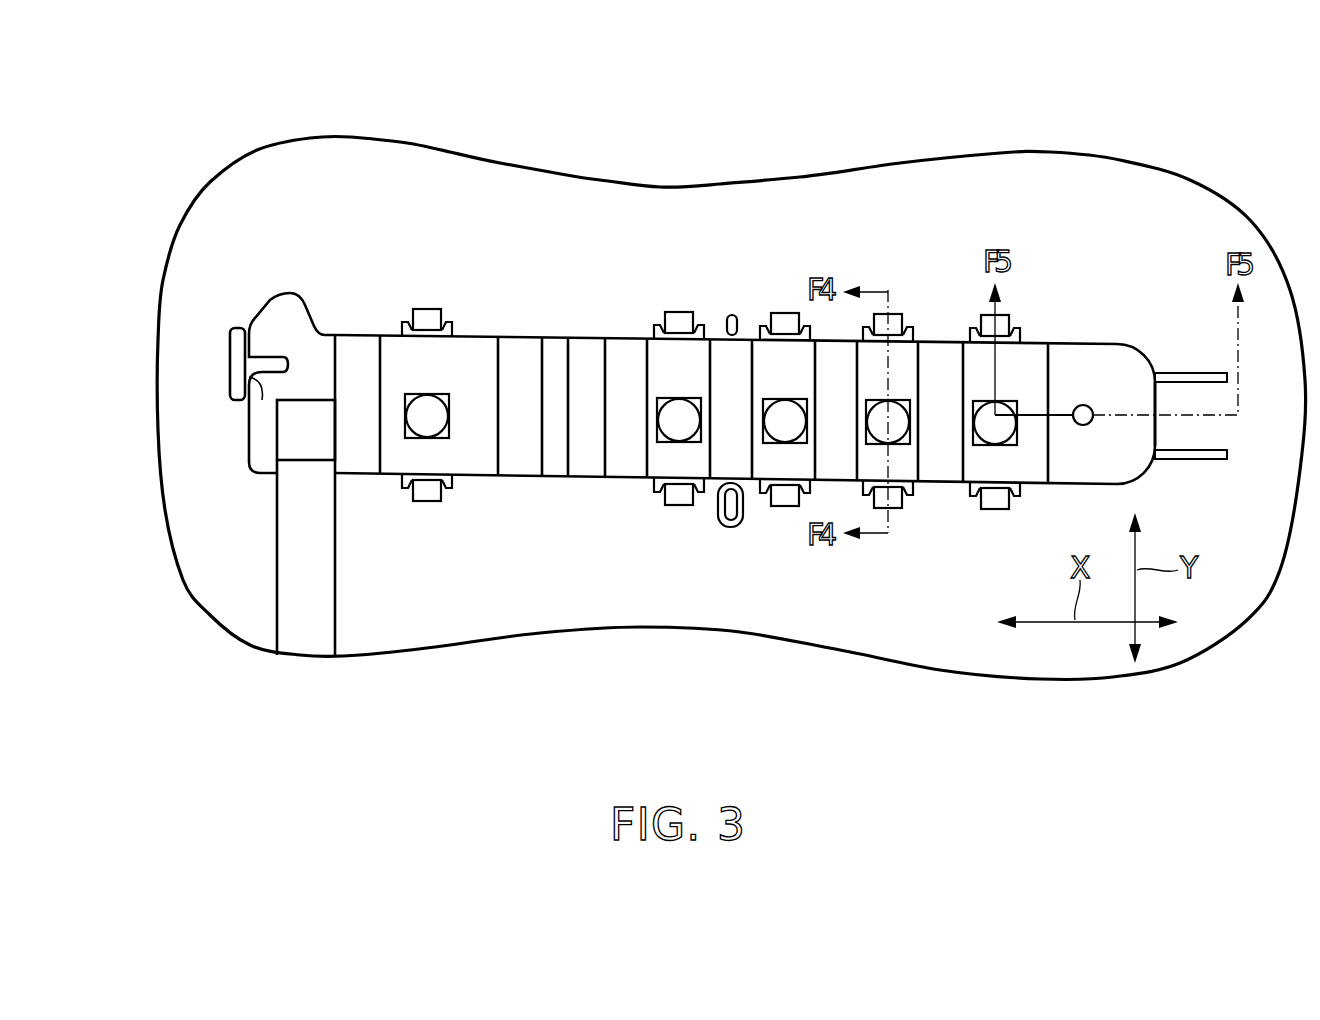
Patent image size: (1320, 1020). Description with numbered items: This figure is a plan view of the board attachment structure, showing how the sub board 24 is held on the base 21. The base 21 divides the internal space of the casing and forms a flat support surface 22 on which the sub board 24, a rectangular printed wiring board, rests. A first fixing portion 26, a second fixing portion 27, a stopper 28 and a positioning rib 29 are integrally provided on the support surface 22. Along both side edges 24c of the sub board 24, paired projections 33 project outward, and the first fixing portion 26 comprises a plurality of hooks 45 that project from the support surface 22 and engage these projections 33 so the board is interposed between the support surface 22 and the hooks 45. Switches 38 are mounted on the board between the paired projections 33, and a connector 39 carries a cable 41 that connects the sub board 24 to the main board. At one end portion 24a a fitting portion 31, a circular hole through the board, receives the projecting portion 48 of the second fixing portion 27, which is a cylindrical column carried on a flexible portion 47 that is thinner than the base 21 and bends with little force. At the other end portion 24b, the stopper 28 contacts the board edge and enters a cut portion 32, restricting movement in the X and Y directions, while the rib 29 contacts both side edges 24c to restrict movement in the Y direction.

The base 21 is at (283, 187).
The support surface 22 is at (305, 188).
The sub board 24 is at (277, 313).
The one end portion 24a is at (1160, 437).
The other end portion 24b is at (292, 435).
The side edges 24c is at (523, 337).
The first fixing portion 26 is at (430, 290).
The second fixing portion 27 is at (1180, 375).
The stopper 28 is at (237, 342).
The positioning rib 29 is at (729, 318).
The fitting portion 31 is at (1080, 406).
The cut portion 32 is at (243, 405).
The projections 33 is at (660, 337).
The switches 38 is at (423, 417).
The connector 39 is at (245, 417).
The cable 41 is at (303, 643).
The hooks 45 is at (678, 313).
The flexible portion 47 is at (1213, 433).
The projecting portion 48 is at (1088, 406).